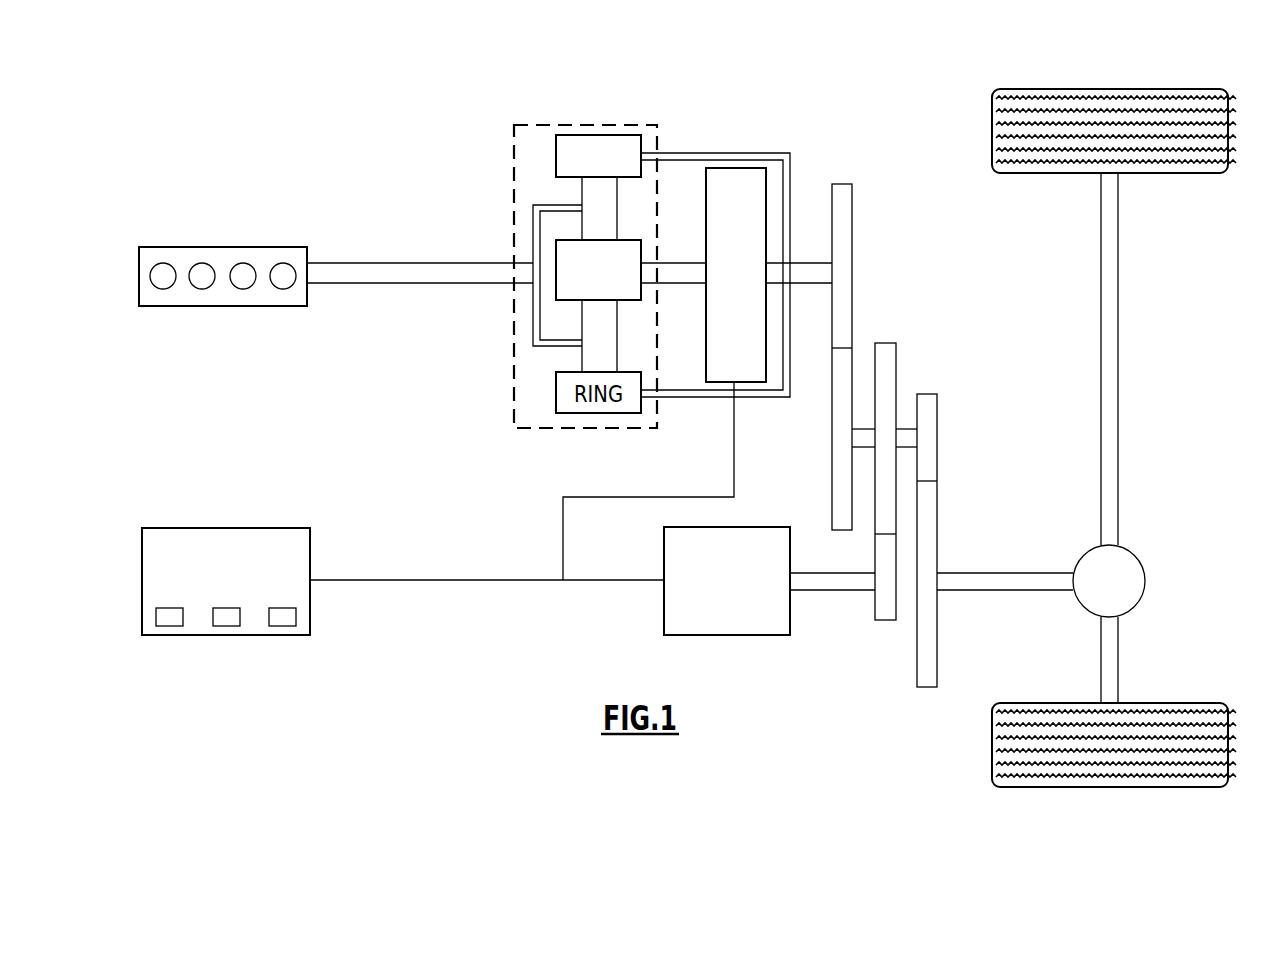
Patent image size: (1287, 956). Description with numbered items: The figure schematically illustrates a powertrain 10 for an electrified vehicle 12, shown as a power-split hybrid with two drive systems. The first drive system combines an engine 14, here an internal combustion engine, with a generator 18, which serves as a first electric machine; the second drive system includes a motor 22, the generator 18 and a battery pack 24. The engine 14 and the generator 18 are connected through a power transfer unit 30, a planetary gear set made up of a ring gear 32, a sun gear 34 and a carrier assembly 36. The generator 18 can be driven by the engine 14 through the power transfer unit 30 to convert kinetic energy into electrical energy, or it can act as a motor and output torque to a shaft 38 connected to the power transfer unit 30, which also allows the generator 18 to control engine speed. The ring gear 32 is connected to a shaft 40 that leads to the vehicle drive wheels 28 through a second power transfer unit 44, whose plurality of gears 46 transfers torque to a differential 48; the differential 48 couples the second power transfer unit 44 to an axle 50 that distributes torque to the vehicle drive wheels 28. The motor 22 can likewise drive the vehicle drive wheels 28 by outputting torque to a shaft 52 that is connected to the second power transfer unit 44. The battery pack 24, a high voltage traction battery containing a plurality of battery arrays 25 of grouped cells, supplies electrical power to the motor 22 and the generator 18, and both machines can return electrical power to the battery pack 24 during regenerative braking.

The powertrain 10 is at (368, 155).
The electrified vehicle 12 is at (752, 86).
The engine 14 is at (157, 247).
The generator 18 is at (715, 168).
The motor 22 is at (790, 618).
The battery pack 24 is at (160, 528).
The battery arrays 25 is at (183, 617).
The vehicle drive wheels 28 is at (1228, 740).
The power transfer unit 30 is at (512, 395).
The ring gear 32 is at (556, 155).
The sun gear 34 is at (556, 248).
The carrier assembly 36 is at (533, 332).
The shaft 38 is at (675, 262).
The shaft 40 is at (808, 262).
The second power transfer unit 44 is at (917, 310).
The gears 46 is at (852, 312).
The differential 48 is at (1137, 600).
The axle 50 is at (1118, 345).
The shaft 52 is at (843, 590).